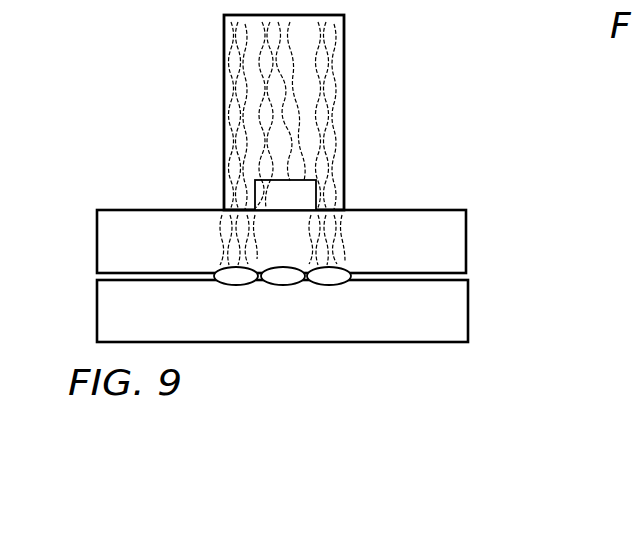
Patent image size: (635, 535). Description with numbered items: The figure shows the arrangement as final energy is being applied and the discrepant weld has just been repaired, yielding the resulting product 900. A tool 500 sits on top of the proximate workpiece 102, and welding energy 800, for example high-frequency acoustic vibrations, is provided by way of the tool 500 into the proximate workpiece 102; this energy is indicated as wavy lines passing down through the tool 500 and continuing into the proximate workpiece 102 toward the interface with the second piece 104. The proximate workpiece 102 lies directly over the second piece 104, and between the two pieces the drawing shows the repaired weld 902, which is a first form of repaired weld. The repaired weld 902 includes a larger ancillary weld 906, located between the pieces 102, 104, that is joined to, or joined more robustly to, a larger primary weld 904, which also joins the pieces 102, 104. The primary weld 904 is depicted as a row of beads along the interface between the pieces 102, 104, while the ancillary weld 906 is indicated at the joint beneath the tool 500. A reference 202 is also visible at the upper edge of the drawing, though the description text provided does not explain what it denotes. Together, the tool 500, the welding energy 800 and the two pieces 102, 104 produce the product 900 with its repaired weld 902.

The proximate workpiece 102 is at (450, 263).
The workpiece 104 is at (452, 327).
The bonding region 202 is at (76, 0).
The tool 500 is at (372, 57).
The welding energy 800 is at (359, 245).
The resulting product 900 is at (344, 287).
The repaired weld 902 is at (322, 306).
The primary weld 904 is at (273, 286).
The ancillary weld 906 is at (223, 288).